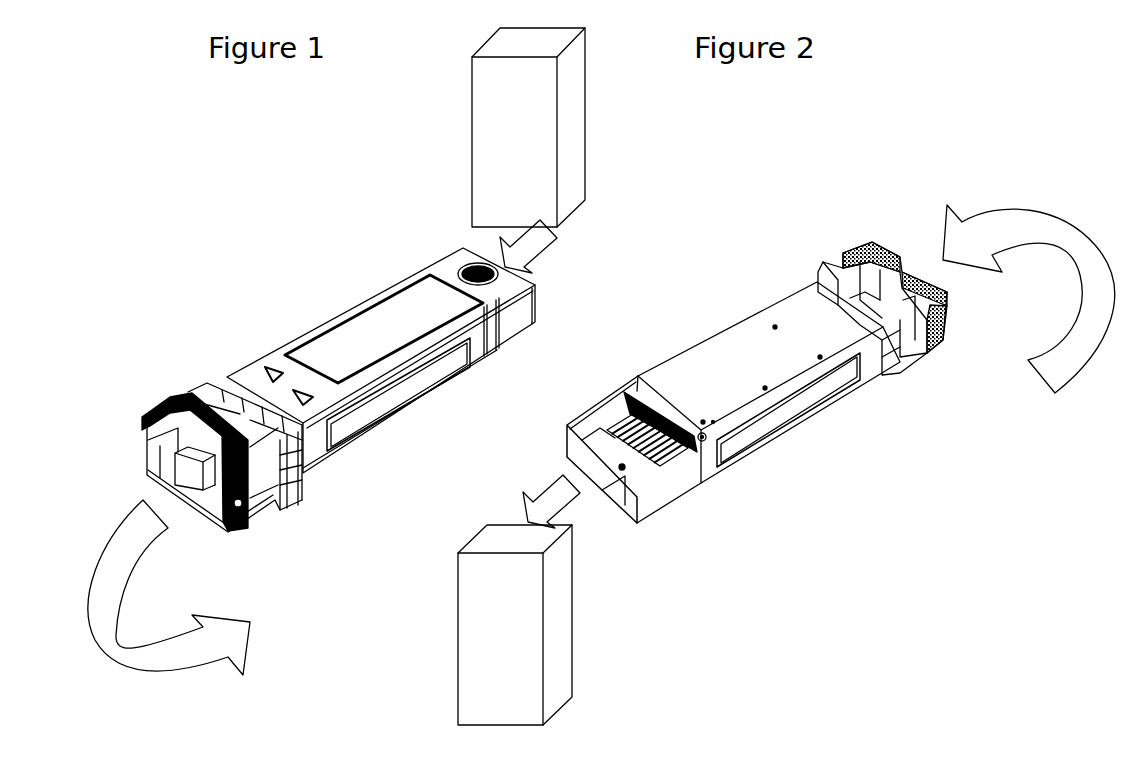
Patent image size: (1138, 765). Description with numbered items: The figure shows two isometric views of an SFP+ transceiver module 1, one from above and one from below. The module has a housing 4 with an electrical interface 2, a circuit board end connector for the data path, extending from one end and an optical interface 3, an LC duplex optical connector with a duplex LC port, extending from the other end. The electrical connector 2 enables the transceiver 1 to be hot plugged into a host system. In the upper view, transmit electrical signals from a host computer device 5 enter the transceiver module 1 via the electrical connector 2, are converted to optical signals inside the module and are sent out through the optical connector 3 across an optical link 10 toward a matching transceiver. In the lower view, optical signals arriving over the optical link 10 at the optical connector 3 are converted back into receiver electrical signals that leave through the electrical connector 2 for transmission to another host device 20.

In FIG. 1, the SFP+ transceiver module 1 is at (240, 331).
In FIG. 2, the SFP+ transceiver module 1 is at (704, 318).
In FIG. 1, the electrical interface 2 is at (527, 313).
In FIG. 2, the electrical interface 2 is at (593, 468).
In FIG. 1, the optical interface 3 is at (125, 445).
In FIG. 2, the optical interface 3 is at (883, 250).
In FIG. 1, the housing 4 is at (378, 320).
In FIG. 2, the housing 4 is at (817, 393).
In FIG. 1, the host computer device 5 is at (503, 121).
In FIG. 1, the optical link 10 is at (112, 559).
In FIG. 2, the optical link 10 is at (967, 251).
In FIG. 2, the host device 20 is at (487, 616).